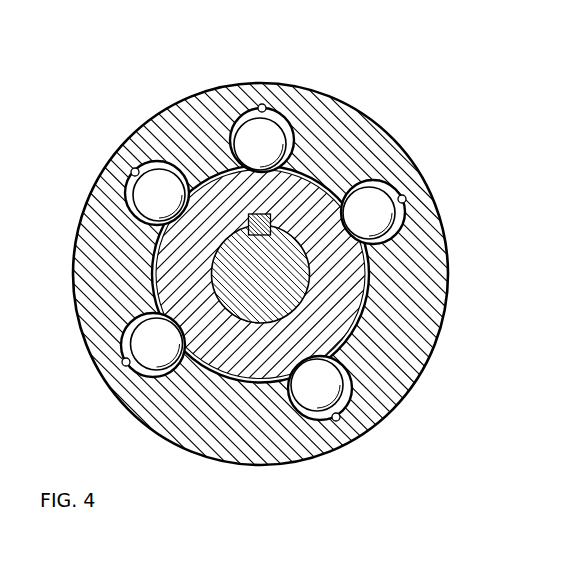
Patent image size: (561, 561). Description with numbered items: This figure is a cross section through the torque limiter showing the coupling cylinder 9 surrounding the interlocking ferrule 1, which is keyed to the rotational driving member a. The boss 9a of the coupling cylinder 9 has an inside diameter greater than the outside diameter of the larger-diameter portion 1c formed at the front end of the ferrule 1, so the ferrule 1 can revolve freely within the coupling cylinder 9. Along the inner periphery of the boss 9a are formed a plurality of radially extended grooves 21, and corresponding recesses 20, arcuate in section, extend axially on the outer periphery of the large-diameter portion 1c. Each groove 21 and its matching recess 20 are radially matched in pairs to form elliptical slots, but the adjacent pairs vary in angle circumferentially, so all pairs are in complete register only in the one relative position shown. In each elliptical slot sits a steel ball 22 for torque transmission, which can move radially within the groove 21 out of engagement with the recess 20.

The interlocking ferrule 1 is at (320, 186).
The larger-diameter portion 1c is at (335, 178).
The coupling cylinder 9 is at (413, 278).
The boss 9a is at (410, 318).
The rotational driving member a is at (230, 266).
The recesses 20 is at (250, 167).
The radially extended grooves 21 is at (267, 106).
The steel ball 22 is at (272, 134).